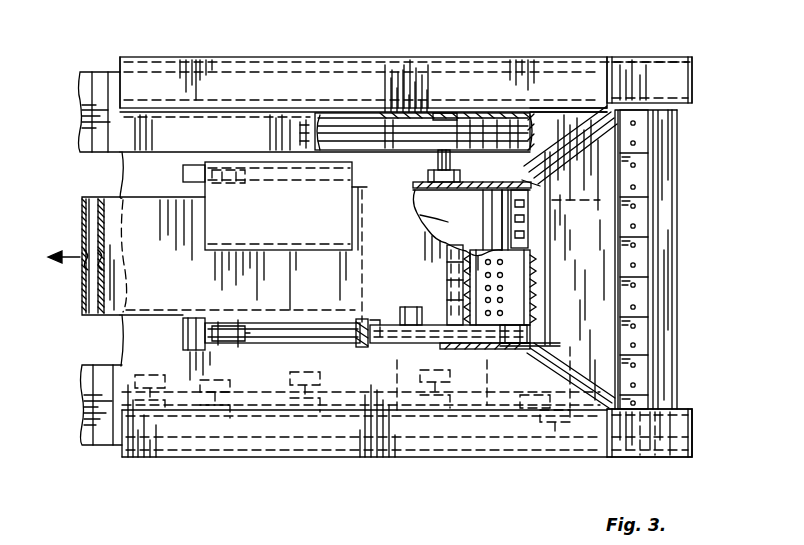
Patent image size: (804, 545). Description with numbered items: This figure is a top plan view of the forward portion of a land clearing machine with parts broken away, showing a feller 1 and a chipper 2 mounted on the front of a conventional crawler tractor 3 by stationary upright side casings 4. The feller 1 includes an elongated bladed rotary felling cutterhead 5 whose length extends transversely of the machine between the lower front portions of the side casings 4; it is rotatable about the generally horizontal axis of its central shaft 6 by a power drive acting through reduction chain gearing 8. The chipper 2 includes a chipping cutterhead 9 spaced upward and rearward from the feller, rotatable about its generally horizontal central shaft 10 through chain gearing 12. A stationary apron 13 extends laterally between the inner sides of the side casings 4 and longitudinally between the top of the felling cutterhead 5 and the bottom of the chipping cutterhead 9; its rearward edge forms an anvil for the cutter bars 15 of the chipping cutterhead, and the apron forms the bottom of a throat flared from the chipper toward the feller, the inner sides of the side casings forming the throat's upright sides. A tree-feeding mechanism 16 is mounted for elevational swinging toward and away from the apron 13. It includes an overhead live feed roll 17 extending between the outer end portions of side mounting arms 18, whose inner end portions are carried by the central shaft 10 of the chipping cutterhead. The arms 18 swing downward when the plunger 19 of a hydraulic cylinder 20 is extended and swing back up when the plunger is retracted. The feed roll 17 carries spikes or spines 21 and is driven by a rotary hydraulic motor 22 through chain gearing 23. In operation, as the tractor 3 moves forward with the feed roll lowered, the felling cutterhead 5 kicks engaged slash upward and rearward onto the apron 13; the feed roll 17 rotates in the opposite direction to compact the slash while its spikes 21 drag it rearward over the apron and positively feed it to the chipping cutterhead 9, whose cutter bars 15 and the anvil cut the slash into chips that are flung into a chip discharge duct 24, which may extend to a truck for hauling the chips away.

The feller 1 is at (683, 171).
The chipper 2 is at (532, 220).
The crawler tractor 3 is at (298, 67).
The side casings 4 is at (663, 72).
The felling cutterhead 5 is at (672, 290).
The central shaft 6 is at (695, 420).
The reduction chain gearing 8 is at (585, 455).
The chipping cutterhead 9 is at (450, 207).
The central shaft 10 is at (444, 163).
The chain gearing 12 is at (430, 128).
The apron 13 is at (596, 326).
The cutter bars 15 is at (528, 200).
The tree-feeding mechanism 16 is at (503, 345).
The feed roll 17 is at (540, 272).
The side mounting arms 18 is at (486, 350).
The plunger 19 is at (360, 320).
The hydraulic cylinder 20 is at (270, 196).
The spikes or spines 21 is at (466, 300).
The rotary hydraulic motor 22 is at (412, 307).
The chain gearing 23 is at (416, 350).
The chip discharge duct 24 is at (145, 210).